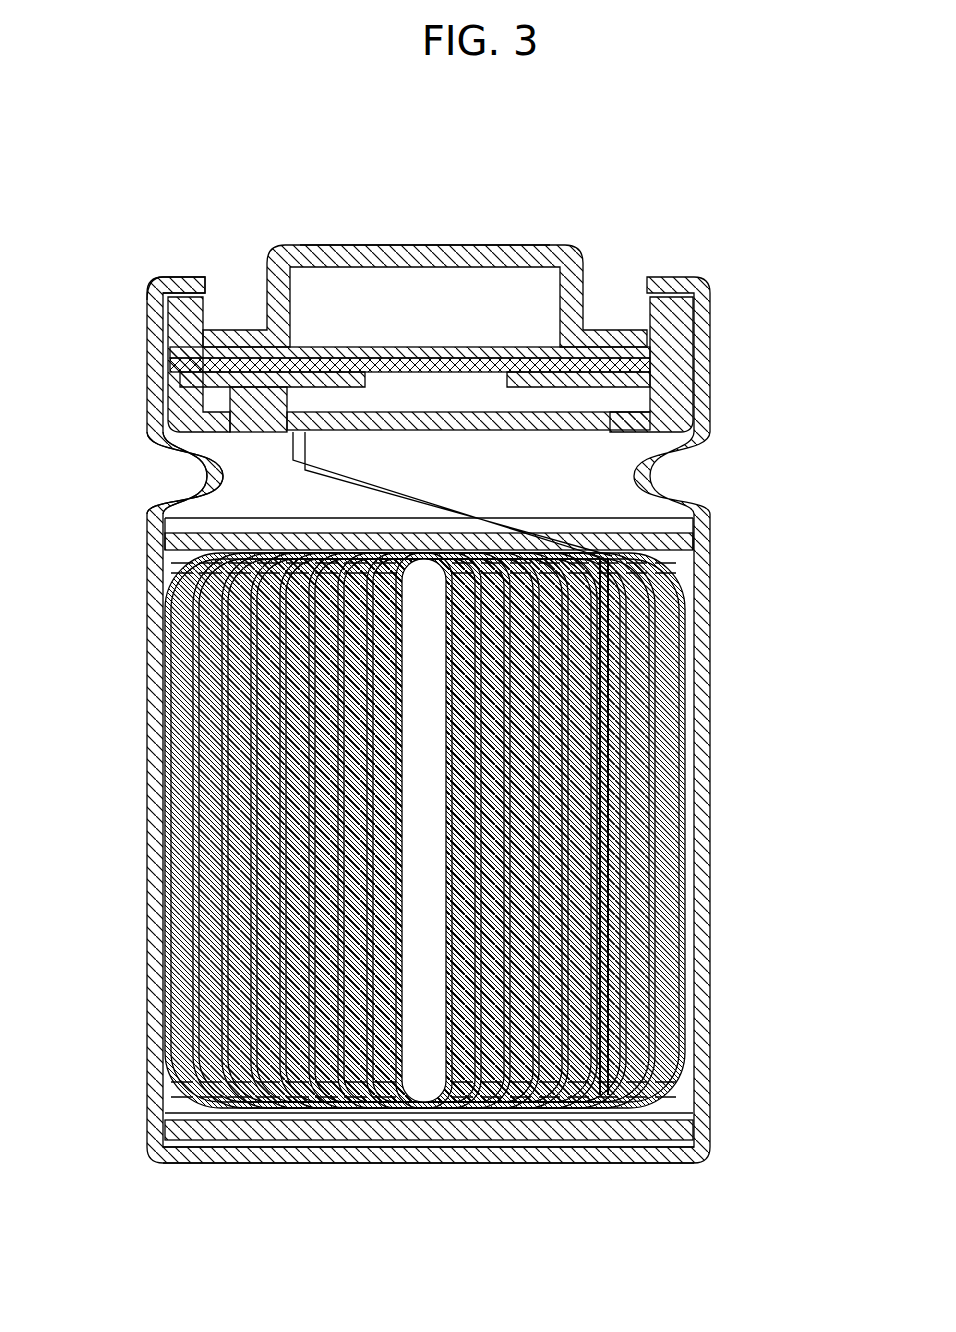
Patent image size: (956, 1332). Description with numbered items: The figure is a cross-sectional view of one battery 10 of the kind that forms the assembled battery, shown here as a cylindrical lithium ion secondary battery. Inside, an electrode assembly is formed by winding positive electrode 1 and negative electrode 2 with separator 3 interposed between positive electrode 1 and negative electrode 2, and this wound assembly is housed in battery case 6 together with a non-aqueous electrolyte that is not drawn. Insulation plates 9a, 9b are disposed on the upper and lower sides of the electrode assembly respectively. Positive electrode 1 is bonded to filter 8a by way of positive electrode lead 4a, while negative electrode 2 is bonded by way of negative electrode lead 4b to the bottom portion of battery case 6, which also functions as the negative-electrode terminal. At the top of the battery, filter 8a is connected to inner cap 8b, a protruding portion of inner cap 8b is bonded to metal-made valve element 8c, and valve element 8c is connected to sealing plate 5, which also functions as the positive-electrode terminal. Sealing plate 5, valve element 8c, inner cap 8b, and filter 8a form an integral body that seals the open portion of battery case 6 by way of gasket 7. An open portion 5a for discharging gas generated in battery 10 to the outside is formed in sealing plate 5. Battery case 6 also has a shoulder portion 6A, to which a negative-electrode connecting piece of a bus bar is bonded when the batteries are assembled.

The battery 10 is at (708, 184).
The positive electrode 1 is at (640, 850).
The negative electrode 2 is at (675, 812).
The separator 3 is at (690, 770).
The positive electrode lead 4a is at (208, 470).
The negative electrode lead 4b is at (457, 1164).
The sealing plate 5 is at (520, 247).
The open portion 5a is at (430, 262).
The battery case 6 is at (148, 742).
The shoulder portion 6A is at (160, 277).
The gasket 7 is at (710, 310).
The filter 8a is at (700, 410).
The inner cap 8b is at (383, 348).
The valve element 8c is at (312, 345).
The insulation plate 9a is at (708, 520).
The insulation plate 9b is at (708, 1118).